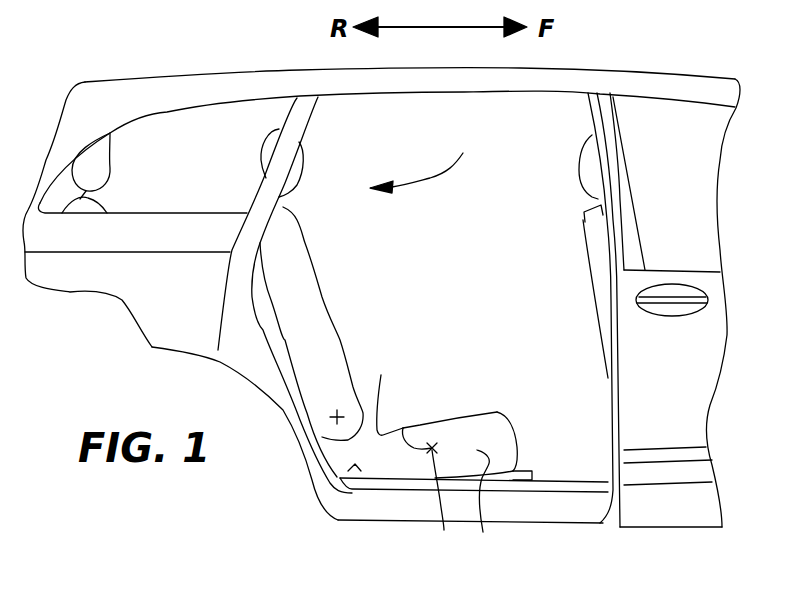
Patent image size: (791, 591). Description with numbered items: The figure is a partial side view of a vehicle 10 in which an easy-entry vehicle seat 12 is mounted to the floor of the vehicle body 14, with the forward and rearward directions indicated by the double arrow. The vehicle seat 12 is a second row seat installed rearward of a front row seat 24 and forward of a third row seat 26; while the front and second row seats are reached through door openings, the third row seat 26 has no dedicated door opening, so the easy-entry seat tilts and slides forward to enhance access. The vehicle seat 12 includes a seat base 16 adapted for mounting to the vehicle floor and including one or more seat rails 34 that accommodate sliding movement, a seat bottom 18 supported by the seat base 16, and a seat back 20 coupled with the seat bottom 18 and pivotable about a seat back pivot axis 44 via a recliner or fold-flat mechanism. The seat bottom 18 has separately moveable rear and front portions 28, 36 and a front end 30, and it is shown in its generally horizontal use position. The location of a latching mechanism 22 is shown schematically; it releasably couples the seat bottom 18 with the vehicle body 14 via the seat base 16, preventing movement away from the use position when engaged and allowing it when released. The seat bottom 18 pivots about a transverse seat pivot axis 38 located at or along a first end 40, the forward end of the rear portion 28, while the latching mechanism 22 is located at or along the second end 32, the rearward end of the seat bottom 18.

The vehicle 10 is at (125, 100).
The vehicle seat 12 is at (425, 163).
The vehicle body 14 is at (561, 481).
The seat base 16 is at (393, 477).
The seat bottom 18 is at (452, 415).
The seat back 20 is at (297, 260).
The latching mechanism 22 is at (348, 480).
The front row seat 24 is at (588, 168).
The third row seat 26 is at (97, 163).
The rear portion of the seat bottom 28 is at (384, 393).
The front end of the seat bottom 30 is at (487, 506).
The second end of the seat bottom 32 is at (325, 457).
The seat rail 34 is at (527, 468).
The front portion of the seat bottom 36 is at (498, 418).
The seat pivot axis 38 is at (405, 422).
The first end of the seat bottom 40 is at (436, 505).
The seat back pivot axis 44 is at (337, 419).